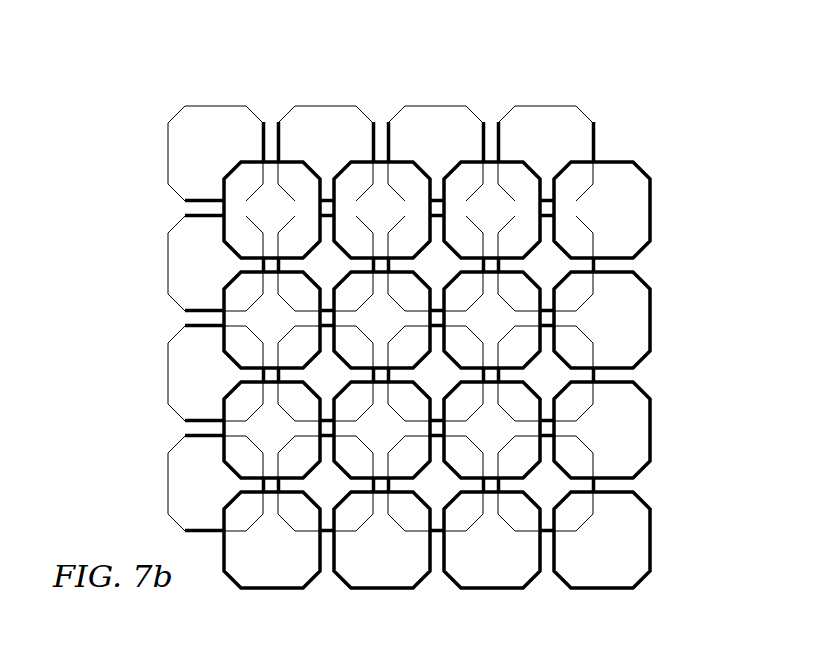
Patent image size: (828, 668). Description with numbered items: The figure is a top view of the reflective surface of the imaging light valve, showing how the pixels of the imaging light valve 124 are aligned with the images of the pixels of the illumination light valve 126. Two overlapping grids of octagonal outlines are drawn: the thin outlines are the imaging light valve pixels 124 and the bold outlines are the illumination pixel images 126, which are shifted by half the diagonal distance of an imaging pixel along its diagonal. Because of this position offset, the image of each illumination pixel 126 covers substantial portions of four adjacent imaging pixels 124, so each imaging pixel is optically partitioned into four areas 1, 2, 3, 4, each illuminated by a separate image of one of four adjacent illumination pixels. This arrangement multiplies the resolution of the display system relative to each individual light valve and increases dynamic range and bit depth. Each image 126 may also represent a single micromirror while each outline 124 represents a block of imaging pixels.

The pixels of the imaging light valve 124 is at (327, 106).
The image of the pixels of the illumination light valve 126 is at (436, 323).
The area 1 is at (272, 210).
The area 2 is at (382, 210).
The area 3 is at (382, 320).
The area 4 is at (272, 320).